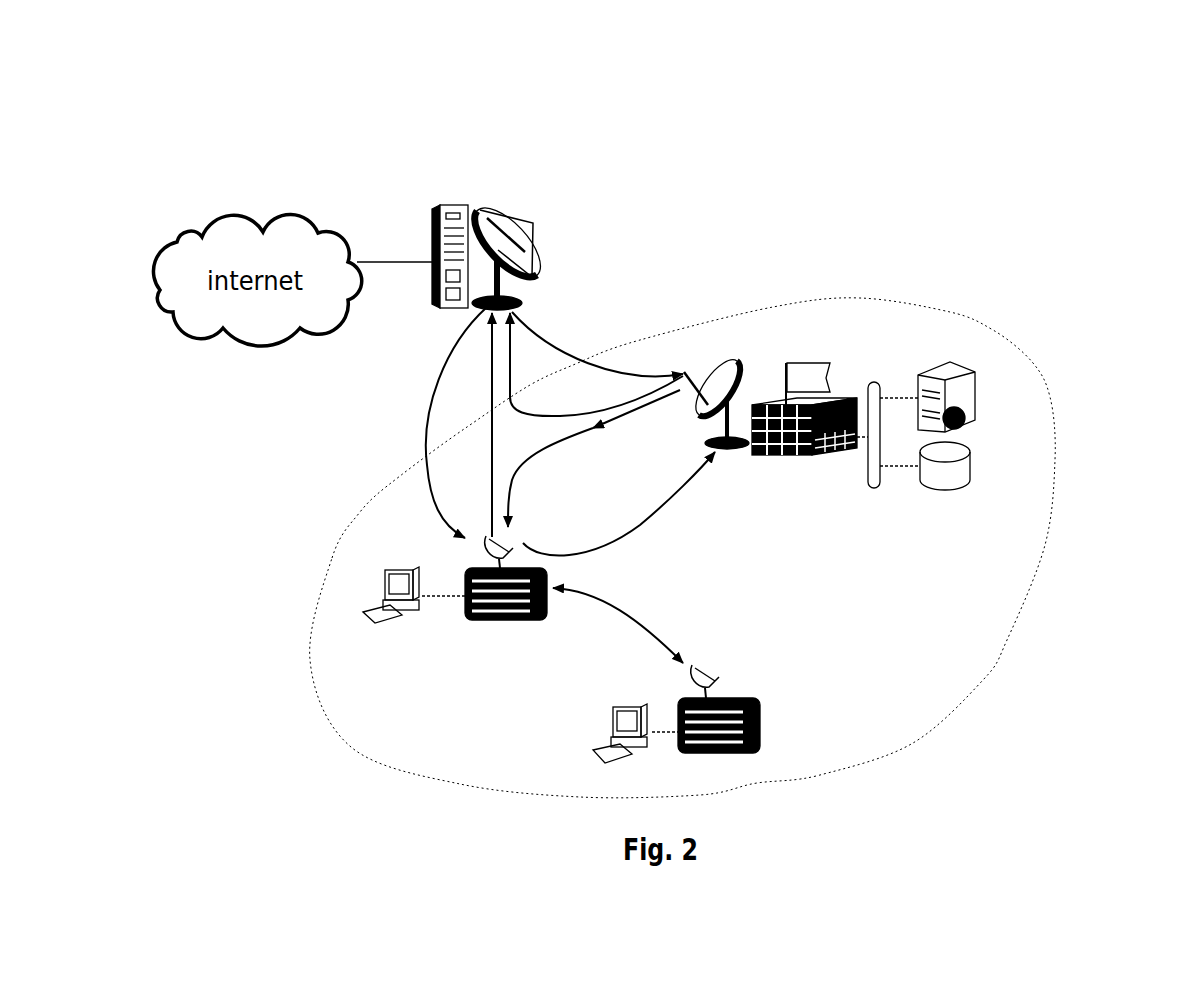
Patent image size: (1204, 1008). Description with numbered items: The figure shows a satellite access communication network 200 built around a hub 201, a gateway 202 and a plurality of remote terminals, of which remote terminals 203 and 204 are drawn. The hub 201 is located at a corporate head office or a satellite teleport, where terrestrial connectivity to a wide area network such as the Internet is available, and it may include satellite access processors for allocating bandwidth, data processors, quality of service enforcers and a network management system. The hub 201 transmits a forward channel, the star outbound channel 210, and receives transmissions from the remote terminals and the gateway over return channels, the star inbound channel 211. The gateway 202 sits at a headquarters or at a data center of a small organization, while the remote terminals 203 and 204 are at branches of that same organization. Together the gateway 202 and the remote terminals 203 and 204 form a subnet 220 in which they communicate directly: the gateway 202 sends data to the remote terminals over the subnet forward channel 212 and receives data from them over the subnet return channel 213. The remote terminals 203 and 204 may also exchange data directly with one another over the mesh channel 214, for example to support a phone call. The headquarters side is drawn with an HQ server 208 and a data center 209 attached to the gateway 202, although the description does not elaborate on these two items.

The satellite access communication network 200 is at (1094, 123).
The hub 201 is at (476, 196).
The gateway 202 is at (816, 358).
The remote terminal 203 is at (500, 618).
The remote terminal 204 is at (764, 729).
The HQ server 208 is at (948, 370).
The data center 209 is at (944, 490).
The star outbound channel 210 is at (350, 490).
The star inbound channel 211 is at (363, 410).
The subnet forward channel 212 is at (597, 430).
The subnet return channel 213 is at (643, 522).
The mesh channel 214 is at (643, 618).
The subnet 220 is at (1049, 526).